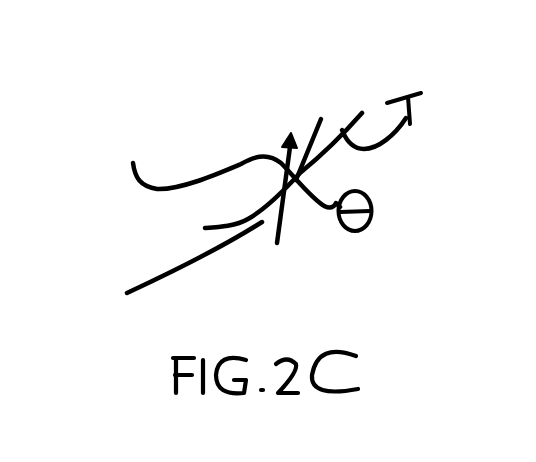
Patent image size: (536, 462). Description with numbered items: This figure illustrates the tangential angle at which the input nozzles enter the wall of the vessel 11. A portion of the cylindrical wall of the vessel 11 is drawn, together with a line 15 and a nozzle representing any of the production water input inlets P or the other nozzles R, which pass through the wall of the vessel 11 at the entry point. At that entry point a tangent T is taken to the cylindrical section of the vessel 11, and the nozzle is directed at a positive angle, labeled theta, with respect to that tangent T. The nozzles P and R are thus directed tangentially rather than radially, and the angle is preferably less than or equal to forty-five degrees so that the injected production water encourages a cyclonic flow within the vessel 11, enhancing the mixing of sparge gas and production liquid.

The vessel 11 is at (206, 228).
The line 15 is at (114, 298).
The production water input inlets P is at (50, 134).
The nozzles R is at (173, 159).
The tangent T is at (381, 121).